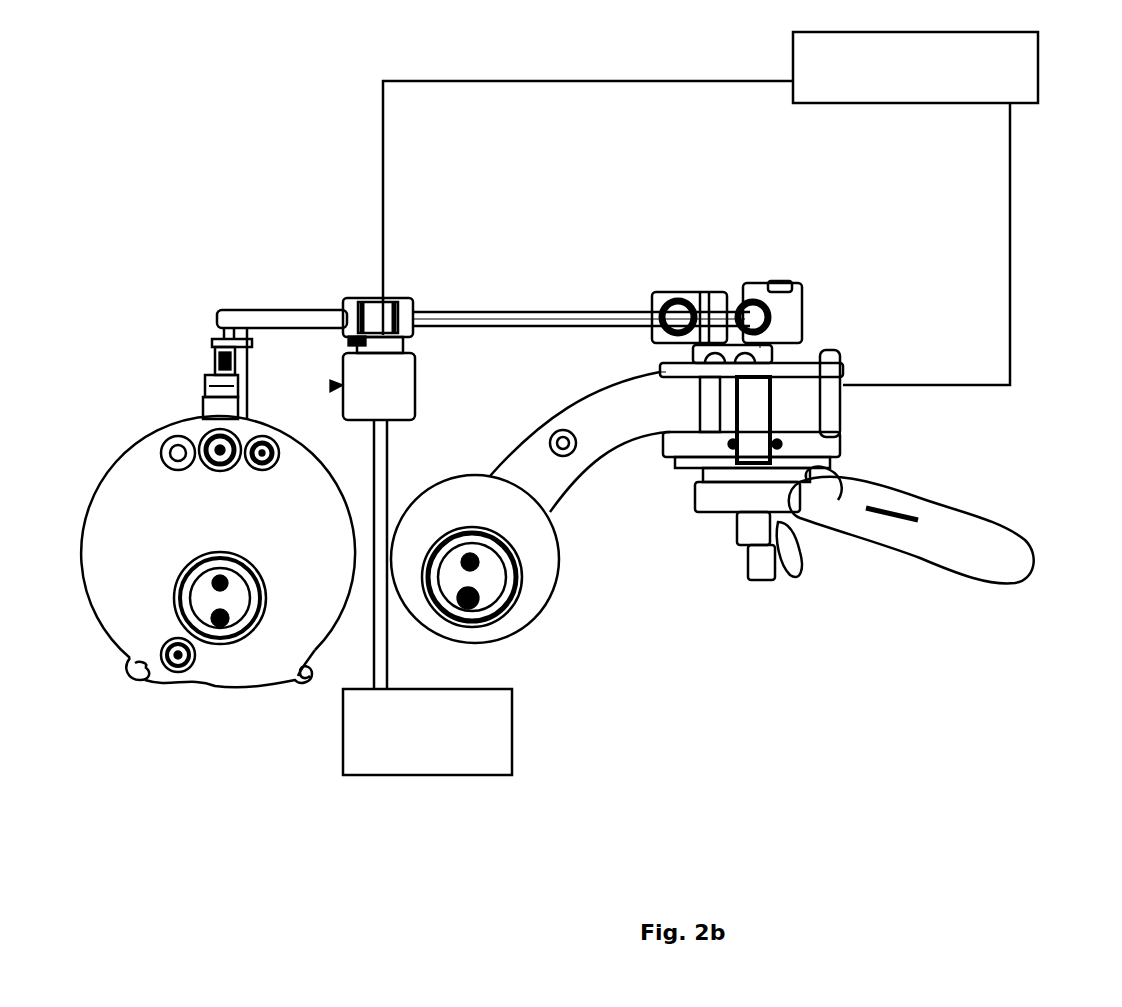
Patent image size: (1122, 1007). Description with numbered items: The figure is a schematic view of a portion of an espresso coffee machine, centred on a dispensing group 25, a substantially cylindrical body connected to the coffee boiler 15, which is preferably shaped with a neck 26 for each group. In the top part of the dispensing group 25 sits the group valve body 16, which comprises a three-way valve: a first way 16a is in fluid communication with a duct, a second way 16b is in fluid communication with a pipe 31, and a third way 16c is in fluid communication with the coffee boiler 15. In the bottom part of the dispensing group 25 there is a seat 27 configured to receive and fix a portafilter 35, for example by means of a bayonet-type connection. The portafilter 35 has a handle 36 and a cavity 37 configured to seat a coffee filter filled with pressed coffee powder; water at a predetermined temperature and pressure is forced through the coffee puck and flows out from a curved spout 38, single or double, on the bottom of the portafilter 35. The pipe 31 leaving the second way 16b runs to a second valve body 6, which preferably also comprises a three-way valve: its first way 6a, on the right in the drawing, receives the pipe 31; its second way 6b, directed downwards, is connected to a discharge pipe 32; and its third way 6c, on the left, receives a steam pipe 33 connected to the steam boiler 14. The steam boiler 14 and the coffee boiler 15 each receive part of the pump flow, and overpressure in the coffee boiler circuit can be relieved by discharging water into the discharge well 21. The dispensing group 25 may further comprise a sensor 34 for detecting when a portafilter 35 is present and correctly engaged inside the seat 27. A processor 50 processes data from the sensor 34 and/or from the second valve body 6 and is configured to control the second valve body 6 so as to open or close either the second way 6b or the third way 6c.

The second valve body 6 is at (400, 302).
The first way 6a is at (420, 306).
The second way 6b is at (409, 350).
The third way 6c is at (345, 338).
The steam boiler 14 is at (108, 456).
The coffee boiler 15 is at (553, 608).
The group valve body 16 is at (800, 314).
The first way 16a is at (768, 344).
The second way 16b is at (740, 300).
The third way 16c is at (662, 372).
The discharge well 21 is at (514, 737).
The dispensing group 25 is at (822, 418).
The neck 26 is at (605, 455).
The seat 27 is at (850, 444).
The pipe 31 is at (582, 308).
The discharge pipe 32 is at (392, 471).
The steam pipe 33 is at (270, 308).
The sensor 34 is at (775, 397).
The portafilter 35 is at (692, 497).
The handle 36 is at (961, 556).
The cavity 37 is at (799, 518).
The curved spout 38 is at (766, 578).
The processor 50 is at (797, 107).